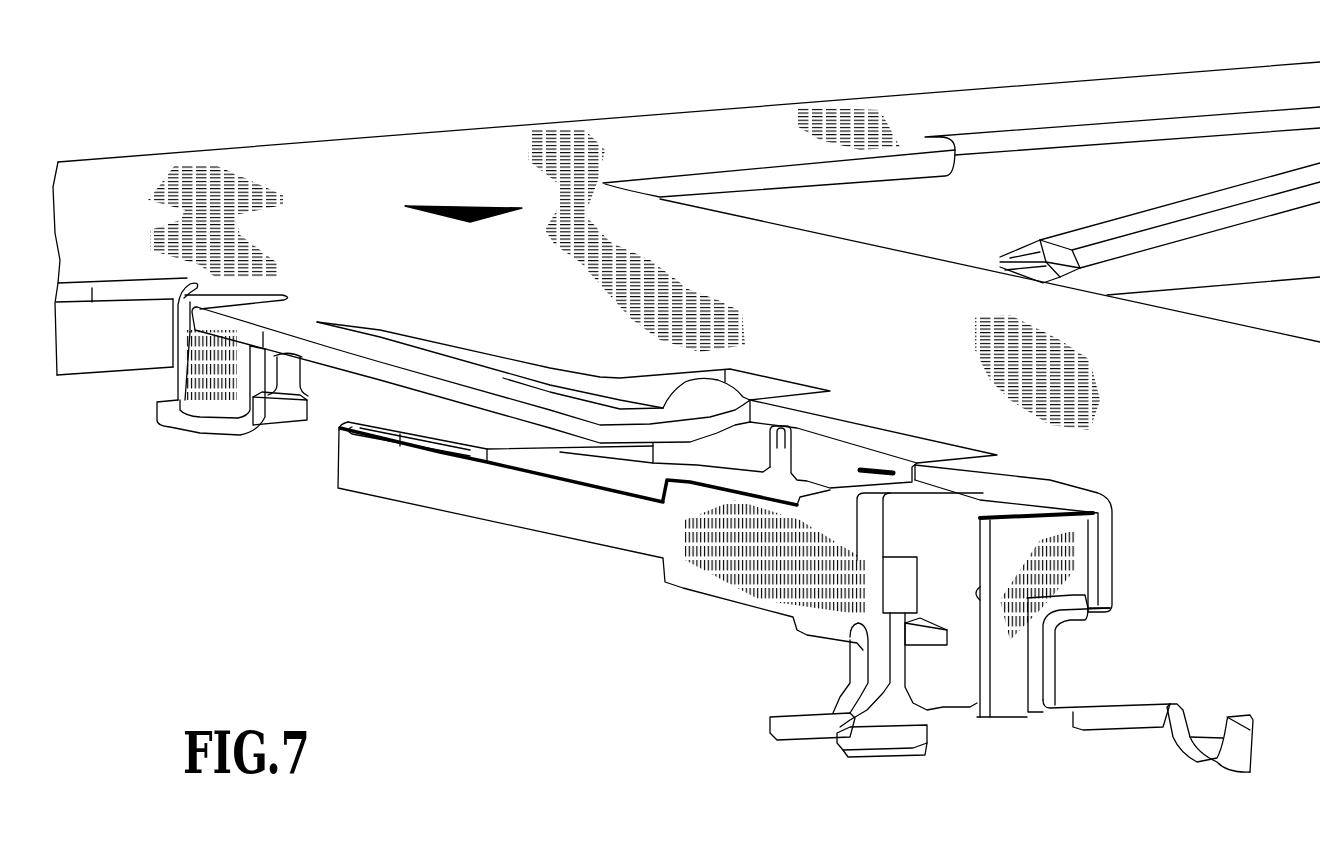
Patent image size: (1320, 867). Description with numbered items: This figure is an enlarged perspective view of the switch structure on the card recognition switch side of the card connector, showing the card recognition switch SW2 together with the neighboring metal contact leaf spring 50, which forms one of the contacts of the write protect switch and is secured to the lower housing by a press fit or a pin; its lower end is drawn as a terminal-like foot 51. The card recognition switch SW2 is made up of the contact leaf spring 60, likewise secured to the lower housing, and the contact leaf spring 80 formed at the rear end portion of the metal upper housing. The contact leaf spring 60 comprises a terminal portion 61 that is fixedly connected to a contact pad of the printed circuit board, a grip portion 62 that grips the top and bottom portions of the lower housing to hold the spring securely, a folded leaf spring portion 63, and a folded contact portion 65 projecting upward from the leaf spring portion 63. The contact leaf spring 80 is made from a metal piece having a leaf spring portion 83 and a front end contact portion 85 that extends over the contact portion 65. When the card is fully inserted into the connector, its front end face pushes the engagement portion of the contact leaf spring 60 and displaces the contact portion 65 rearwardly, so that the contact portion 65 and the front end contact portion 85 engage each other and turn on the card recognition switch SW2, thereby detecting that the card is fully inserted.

The card recognition switch SW2 is at (320, 503).
The metal contact leaf spring 50 is at (1000, 680).
The terminal portion of fixed contact member 51 is at (913, 750).
The contact leaf spring 60 is at (588, 583).
The terminal portion 61 is at (802, 717).
The grip portion 62 is at (902, 465).
The folded leaf spring portion 63 is at (547, 460).
The folded contact portion 65 is at (760, 425).
The contact leaf spring 80 is at (448, 373).
The leaf spring portion 83 is at (388, 350).
The front end contact portion 85 is at (687, 388).